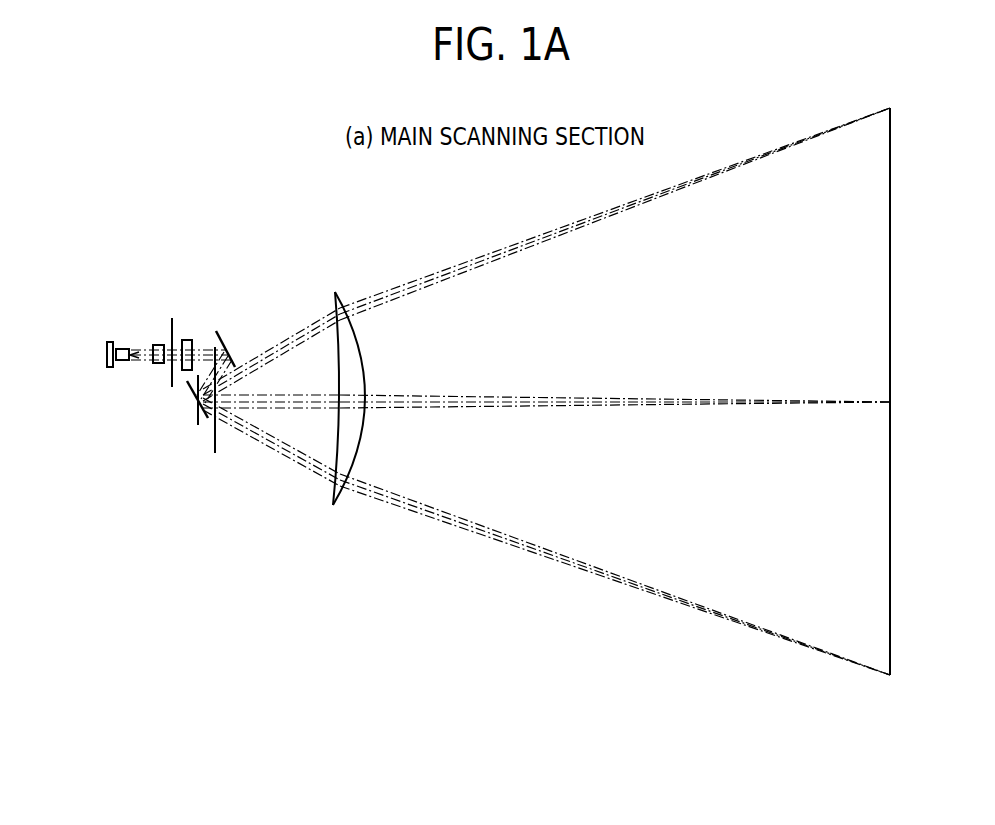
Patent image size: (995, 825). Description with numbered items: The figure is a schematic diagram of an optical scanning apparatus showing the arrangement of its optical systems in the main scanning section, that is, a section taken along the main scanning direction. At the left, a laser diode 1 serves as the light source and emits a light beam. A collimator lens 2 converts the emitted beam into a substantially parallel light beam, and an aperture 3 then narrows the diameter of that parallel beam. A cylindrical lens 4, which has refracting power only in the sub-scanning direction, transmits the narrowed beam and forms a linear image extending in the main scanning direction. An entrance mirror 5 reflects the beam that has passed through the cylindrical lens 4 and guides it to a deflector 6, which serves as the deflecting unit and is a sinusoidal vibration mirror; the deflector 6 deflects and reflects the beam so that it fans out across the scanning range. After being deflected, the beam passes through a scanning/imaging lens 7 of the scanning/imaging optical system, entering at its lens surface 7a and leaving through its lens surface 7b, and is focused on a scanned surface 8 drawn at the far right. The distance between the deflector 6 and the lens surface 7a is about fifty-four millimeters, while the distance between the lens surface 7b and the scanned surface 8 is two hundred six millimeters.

The laser diode 1 is at (124, 345).
The collimator lens 2 is at (156, 345).
The aperture 3 is at (172, 318).
The cylindrical lens 4 is at (187, 340).
The entrance mirror 5 is at (217, 331).
The deflector 6 is at (193, 396).
The scanning/imaging lens 7 is at (343, 419).
The lens surface 7a is at (337, 450).
The lens surface 7b is at (359, 453).
The scanned surface 8 is at (890, 566).